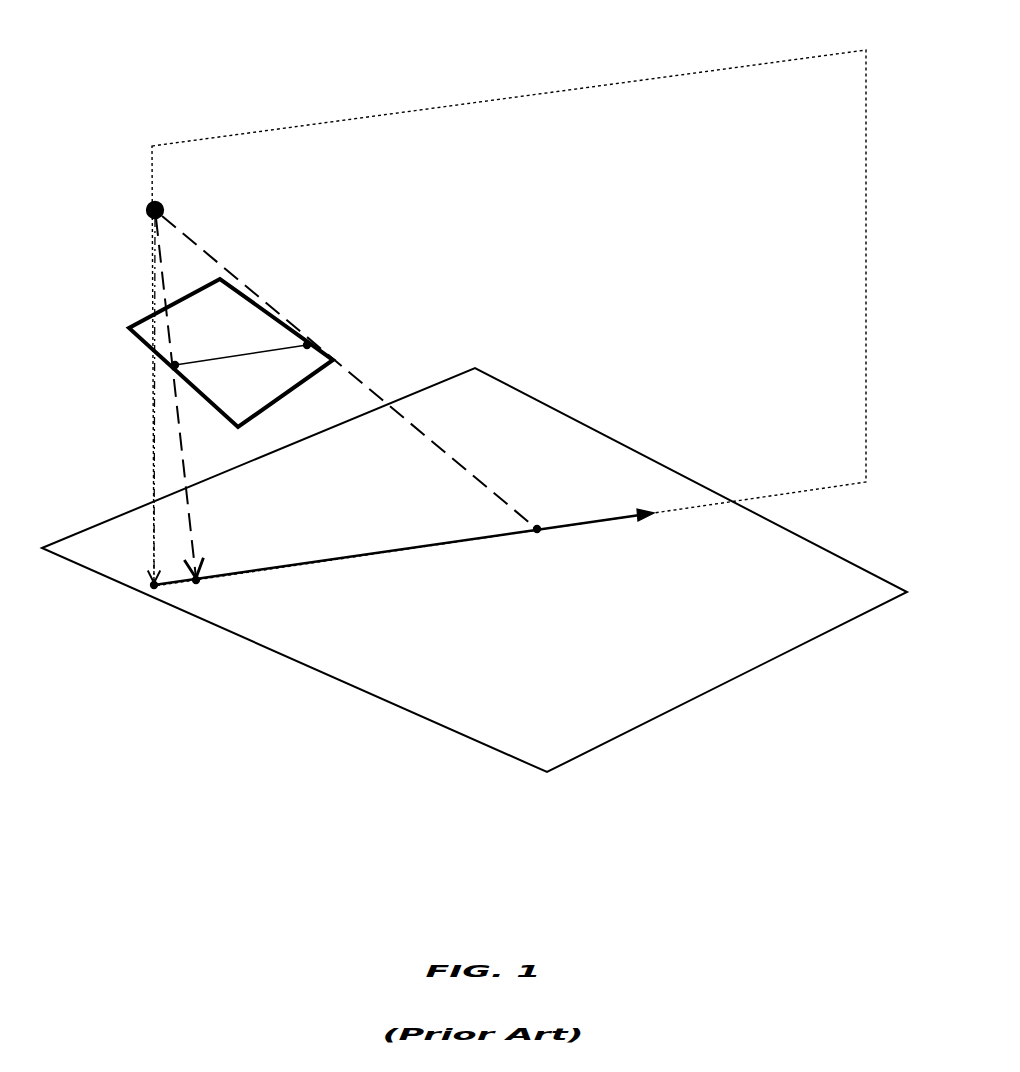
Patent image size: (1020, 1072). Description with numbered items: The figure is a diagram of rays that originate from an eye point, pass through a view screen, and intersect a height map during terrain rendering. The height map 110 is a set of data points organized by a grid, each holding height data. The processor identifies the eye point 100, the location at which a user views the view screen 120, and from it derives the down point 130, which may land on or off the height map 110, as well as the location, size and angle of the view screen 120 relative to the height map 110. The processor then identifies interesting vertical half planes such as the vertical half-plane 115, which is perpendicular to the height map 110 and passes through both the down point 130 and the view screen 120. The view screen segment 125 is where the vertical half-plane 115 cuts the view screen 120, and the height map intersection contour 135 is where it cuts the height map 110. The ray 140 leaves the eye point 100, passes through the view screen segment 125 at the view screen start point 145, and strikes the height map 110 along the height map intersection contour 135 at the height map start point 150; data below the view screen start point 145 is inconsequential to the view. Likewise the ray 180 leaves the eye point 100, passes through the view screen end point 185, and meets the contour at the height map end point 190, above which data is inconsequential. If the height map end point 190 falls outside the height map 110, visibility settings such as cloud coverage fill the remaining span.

The eye point 100 is at (124, 177).
The height map 110 is at (474, 602).
The vertical half-plane 115 is at (509, 300).
The view screen 120 is at (188, 336).
The view screen segment 125 is at (322, 275).
The down point 130 is at (114, 445).
The height map intersection contour 135 is at (500, 465).
The ray 140 is at (243, 398).
The view screen start point 145 is at (110, 412).
The height map start point 150 is at (306, 621).
The ray 180 is at (349, 372).
The view screen end point 185 is at (373, 309).
The height map end point 190 is at (615, 575).